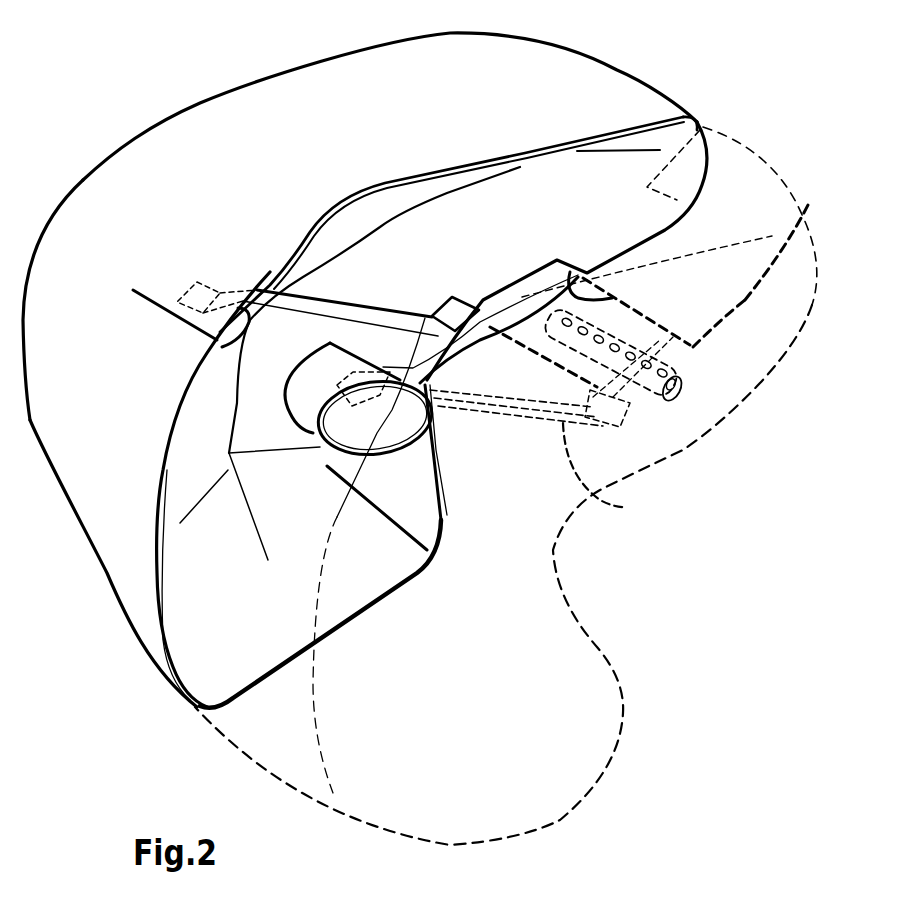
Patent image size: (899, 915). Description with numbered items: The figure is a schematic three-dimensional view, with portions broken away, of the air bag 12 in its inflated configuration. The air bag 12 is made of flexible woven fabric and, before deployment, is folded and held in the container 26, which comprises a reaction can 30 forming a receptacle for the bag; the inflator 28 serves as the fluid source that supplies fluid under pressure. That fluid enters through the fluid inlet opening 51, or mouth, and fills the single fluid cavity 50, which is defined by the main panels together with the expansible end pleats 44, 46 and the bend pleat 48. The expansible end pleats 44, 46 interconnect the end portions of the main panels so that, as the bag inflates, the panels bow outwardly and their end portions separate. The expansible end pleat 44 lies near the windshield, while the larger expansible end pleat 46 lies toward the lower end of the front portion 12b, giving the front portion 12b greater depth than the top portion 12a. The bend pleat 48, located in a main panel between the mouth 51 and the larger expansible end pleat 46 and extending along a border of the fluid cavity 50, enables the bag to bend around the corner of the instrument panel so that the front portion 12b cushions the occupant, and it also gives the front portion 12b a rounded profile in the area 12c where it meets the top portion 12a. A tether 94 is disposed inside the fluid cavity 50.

The air bag 12 is at (180, 78).
The top portion 12a is at (693, 467).
The front portion 12b is at (118, 640).
The rounded profile area 12c is at (35, 202).
The container 26 is at (766, 216).
The inflator 28 is at (673, 397).
The reaction can 30 is at (701, 361).
The expansible end pleat 44 is at (683, 170).
The expansible end pleat 46 is at (228, 455).
The bend pleat 48 is at (393, 452).
The fluid cavity 50 is at (223, 643).
The fluid inlet opening 51 is at (615, 300).
The tether 94 is at (543, 456).